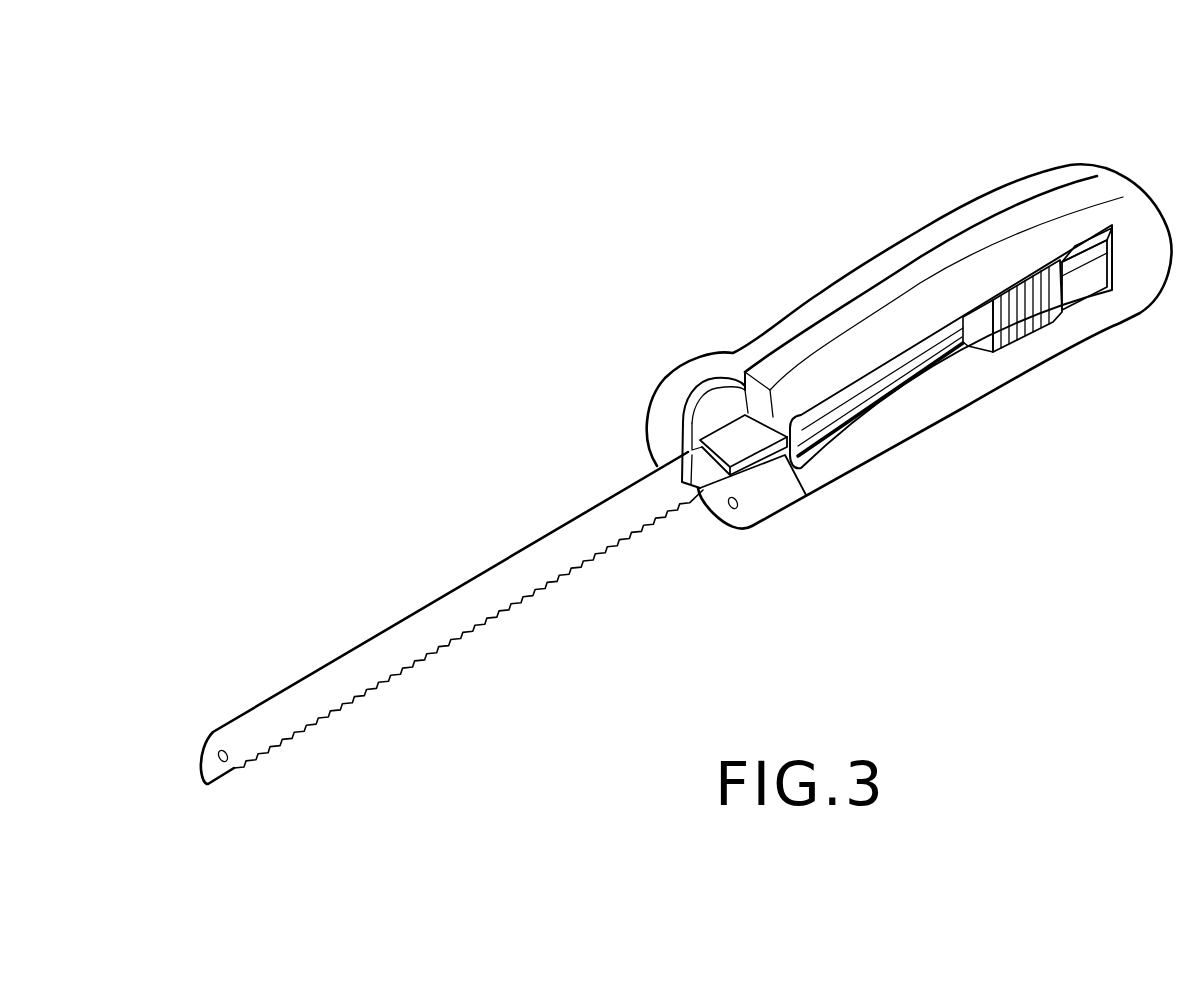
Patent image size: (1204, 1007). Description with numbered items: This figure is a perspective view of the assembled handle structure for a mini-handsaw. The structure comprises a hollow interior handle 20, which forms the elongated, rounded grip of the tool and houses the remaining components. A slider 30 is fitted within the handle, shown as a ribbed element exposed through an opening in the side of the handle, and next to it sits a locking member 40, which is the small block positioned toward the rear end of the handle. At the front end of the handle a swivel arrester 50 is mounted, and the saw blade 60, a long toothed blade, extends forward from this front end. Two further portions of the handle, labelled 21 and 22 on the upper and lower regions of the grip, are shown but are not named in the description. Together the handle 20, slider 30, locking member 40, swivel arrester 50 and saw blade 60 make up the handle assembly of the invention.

The hollow interior handle 20 is at (877, 183).
The upper handle housing 21 is at (818, 305).
The lower handle housing 22 is at (902, 427).
The slider 30 is at (1027, 313).
The locking member 40 is at (1082, 287).
The swivel arrester 50 is at (760, 440).
The saw blade 60 is at (476, 590).